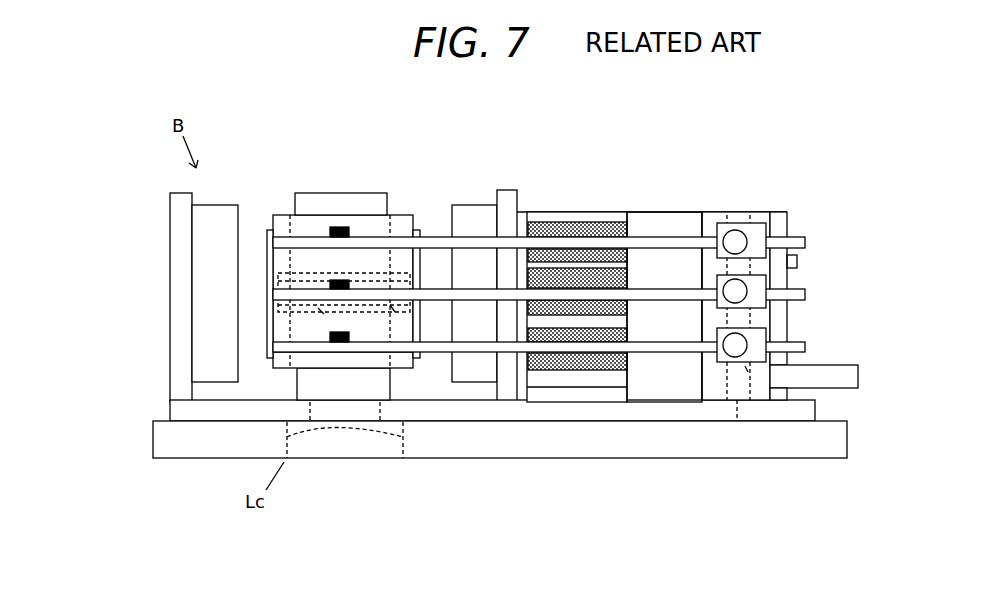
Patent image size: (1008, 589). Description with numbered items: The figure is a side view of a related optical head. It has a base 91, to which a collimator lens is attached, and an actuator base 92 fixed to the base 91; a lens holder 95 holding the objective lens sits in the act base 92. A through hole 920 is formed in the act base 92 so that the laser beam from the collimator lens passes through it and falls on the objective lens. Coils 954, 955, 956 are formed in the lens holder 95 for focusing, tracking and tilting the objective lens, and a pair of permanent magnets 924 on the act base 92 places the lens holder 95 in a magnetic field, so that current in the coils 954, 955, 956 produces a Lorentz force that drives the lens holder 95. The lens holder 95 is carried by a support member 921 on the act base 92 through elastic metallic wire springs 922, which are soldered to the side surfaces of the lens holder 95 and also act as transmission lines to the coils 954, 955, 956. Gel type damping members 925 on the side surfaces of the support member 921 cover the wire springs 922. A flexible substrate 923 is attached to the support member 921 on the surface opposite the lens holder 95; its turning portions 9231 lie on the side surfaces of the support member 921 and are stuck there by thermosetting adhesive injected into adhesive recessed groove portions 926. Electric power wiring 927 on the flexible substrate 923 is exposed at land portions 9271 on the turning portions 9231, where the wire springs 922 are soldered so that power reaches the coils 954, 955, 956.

The base 91 is at (215, 458).
The actuator base 92 is at (182, 375).
The lens holder 95 is at (402, 225).
The through hole 920 is at (363, 405).
The support member 921 is at (592, 217).
The wire springs 922 is at (665, 290).
The flexible substrate 923 is at (790, 214).
The turning portions 9231 is at (705, 228).
The permanent magnets 924 is at (217, 278).
The damping members 925 is at (577, 325).
The adhesive recessed groove portions 926 is at (748, 372).
The electric power wiring 927 is at (757, 284).
The land portions 9271 is at (742, 282).
The coil 954 is at (393, 310).
The coil 955 is at (268, 233).
The coil 956 is at (322, 310).